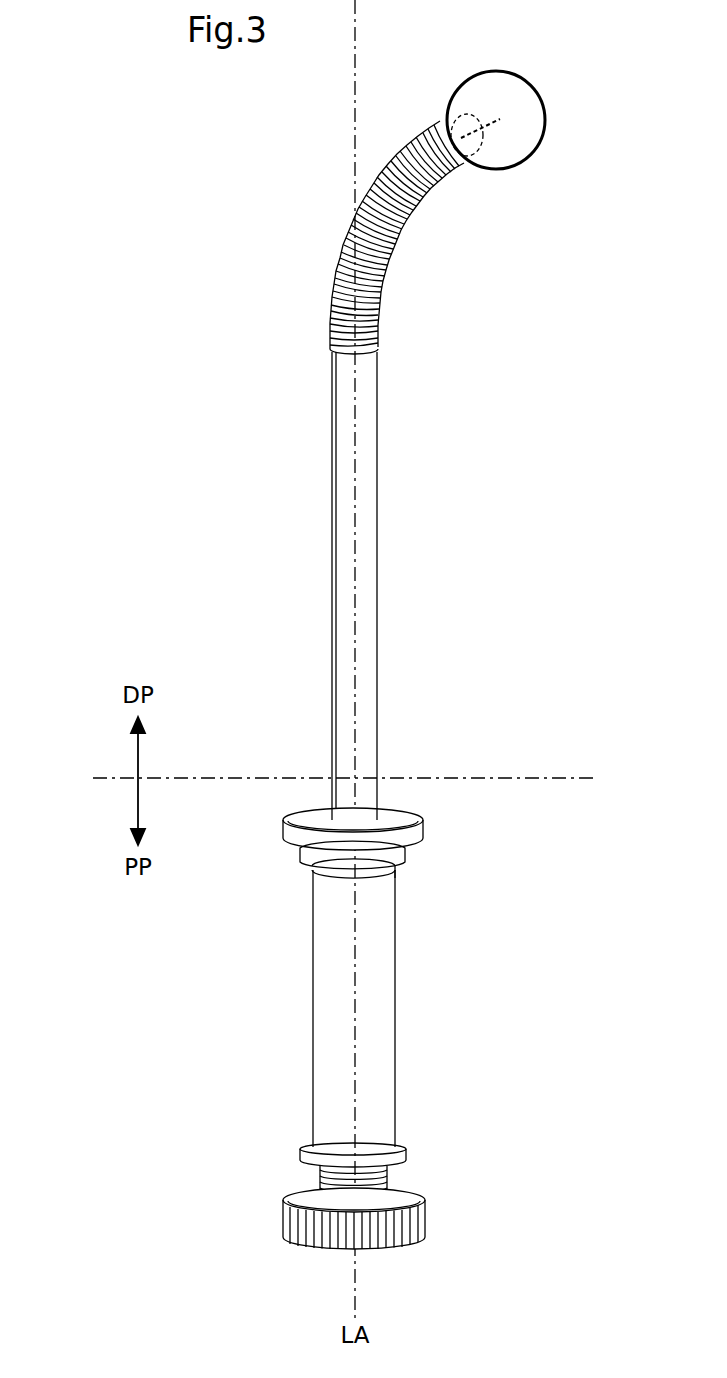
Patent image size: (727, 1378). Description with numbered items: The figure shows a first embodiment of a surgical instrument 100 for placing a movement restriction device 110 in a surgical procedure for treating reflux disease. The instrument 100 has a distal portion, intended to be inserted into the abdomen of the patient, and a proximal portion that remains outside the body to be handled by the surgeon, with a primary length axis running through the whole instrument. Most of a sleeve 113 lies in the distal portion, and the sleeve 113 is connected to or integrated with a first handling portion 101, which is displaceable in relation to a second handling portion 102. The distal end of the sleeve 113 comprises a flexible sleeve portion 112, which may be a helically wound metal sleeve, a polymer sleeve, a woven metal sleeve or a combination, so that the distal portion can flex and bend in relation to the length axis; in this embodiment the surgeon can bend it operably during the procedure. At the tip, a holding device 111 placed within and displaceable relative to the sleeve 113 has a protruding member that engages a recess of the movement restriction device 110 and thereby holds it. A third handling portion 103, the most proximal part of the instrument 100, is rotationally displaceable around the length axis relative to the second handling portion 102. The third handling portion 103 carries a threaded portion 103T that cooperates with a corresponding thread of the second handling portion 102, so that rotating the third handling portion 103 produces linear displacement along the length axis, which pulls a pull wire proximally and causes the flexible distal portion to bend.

The surgical instrument 100 is at (203, 242).
The first handling portion 101 is at (415, 832).
The second handling portion 102 is at (388, 1019).
The third handling portion 103 is at (408, 1233).
The threaded portion 103T is at (385, 1185).
The movement restriction device 110 is at (528, 102).
The holding device 111 is at (485, 128).
The flexible sleeve portion 112 is at (405, 223).
The sleeve 113 is at (410, 508).